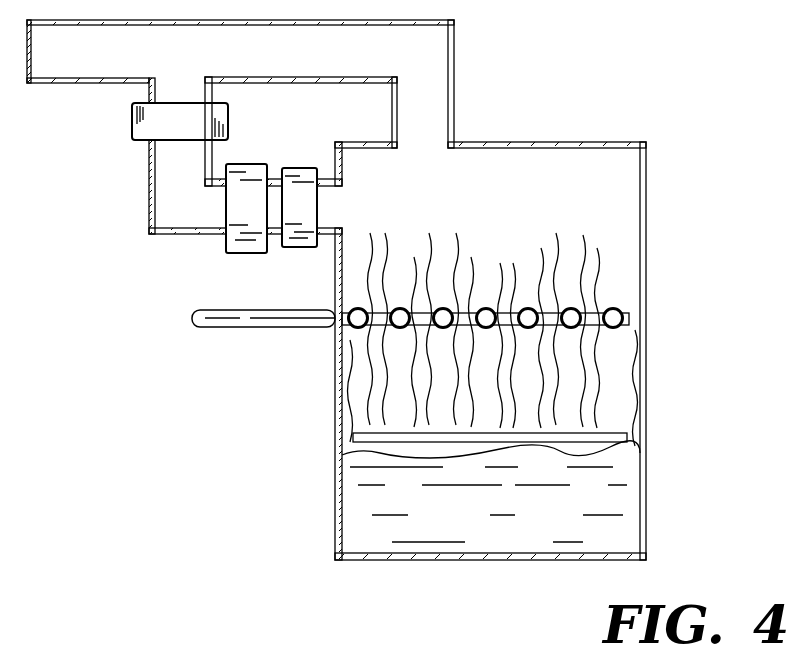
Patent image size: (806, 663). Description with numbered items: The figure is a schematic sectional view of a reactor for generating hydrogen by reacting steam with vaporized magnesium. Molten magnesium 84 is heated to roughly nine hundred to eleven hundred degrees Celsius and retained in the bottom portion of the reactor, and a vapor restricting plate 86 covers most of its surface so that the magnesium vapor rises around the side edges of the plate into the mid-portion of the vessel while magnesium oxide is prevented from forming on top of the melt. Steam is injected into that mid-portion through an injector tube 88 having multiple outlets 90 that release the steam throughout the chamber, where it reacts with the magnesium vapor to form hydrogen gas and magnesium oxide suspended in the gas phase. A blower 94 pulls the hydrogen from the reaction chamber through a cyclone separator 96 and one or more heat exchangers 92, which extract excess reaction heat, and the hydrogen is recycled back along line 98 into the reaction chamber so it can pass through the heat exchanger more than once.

The line 98 is at (433, 58).
The heat exchanger 92 is at (130, 120).
The cyclone separator 96 is at (248, 254).
The blower 94 is at (300, 249).
The injector tube 88 is at (235, 328).
The outlets 90 is at (614, 308).
The vapor restricting plate 86 is at (567, 432).
The molten magnesium 84 is at (608, 522).